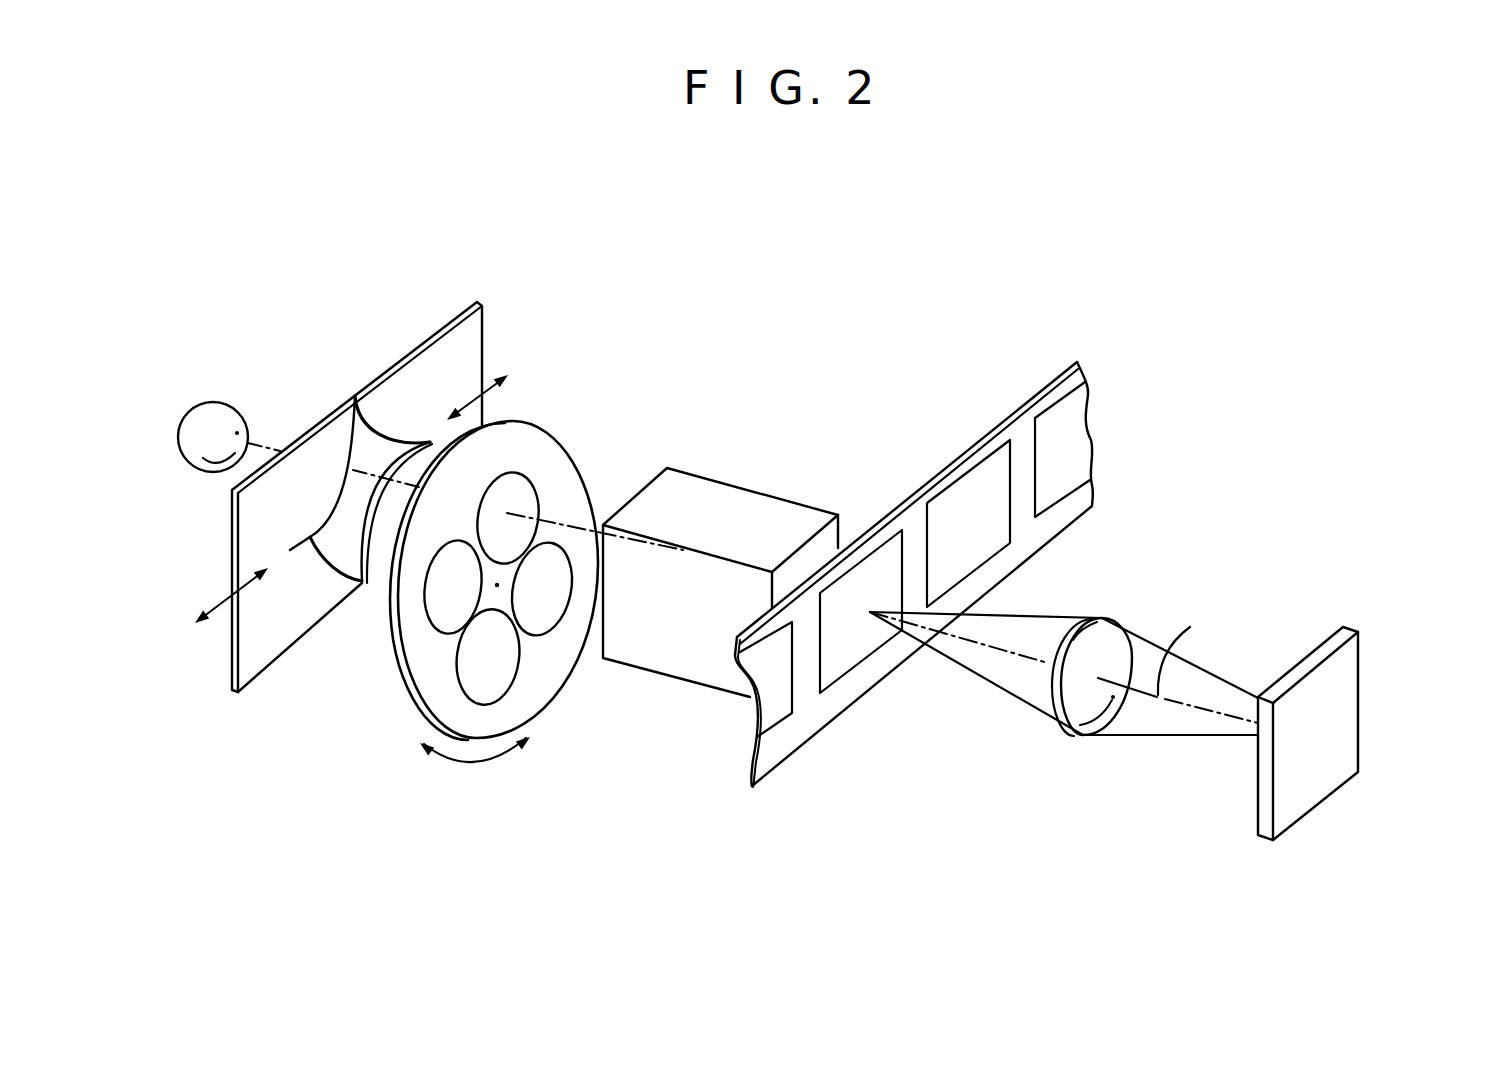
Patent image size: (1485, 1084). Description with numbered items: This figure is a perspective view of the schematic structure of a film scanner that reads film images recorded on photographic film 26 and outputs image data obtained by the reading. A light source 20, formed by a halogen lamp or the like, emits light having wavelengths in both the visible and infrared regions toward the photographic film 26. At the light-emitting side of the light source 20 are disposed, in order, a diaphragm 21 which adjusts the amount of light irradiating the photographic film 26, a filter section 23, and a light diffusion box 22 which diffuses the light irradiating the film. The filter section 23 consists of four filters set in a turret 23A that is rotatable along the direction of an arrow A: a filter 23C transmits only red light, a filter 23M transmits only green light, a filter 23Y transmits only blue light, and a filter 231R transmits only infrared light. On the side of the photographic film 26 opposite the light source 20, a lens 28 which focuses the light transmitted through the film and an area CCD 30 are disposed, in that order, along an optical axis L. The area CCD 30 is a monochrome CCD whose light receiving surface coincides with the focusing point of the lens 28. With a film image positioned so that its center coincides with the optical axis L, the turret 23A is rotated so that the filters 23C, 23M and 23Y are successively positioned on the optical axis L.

The light source 20 is at (220, 402).
The diaphragm 21 is at (432, 330).
The light diffusion box 22 is at (760, 497).
The filter section 23 is at (568, 400).
The filter 23M is at (511, 490).
The filter 23C is at (545, 563).
The filter 23Y is at (440, 606).
The filter 231R is at (543, 602).
The turret 23A is at (535, 705).
The photographic film 26 is at (1052, 380).
The lens 28 is at (1130, 601).
The area CCD 30 is at (1360, 708).
The arrow A is at (470, 763).
The optical axis L is at (1192, 627).